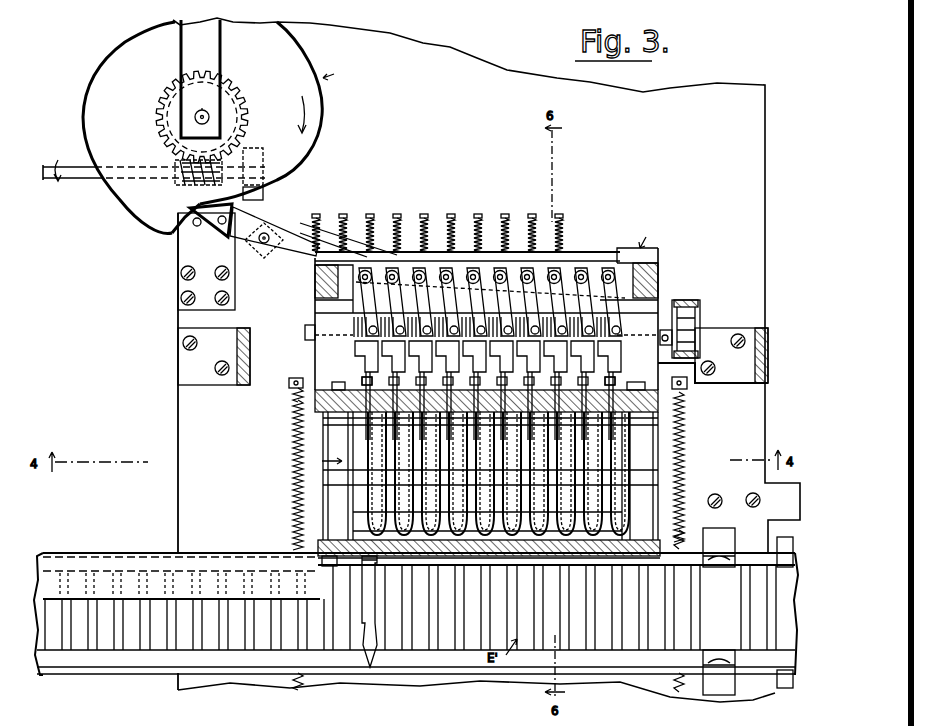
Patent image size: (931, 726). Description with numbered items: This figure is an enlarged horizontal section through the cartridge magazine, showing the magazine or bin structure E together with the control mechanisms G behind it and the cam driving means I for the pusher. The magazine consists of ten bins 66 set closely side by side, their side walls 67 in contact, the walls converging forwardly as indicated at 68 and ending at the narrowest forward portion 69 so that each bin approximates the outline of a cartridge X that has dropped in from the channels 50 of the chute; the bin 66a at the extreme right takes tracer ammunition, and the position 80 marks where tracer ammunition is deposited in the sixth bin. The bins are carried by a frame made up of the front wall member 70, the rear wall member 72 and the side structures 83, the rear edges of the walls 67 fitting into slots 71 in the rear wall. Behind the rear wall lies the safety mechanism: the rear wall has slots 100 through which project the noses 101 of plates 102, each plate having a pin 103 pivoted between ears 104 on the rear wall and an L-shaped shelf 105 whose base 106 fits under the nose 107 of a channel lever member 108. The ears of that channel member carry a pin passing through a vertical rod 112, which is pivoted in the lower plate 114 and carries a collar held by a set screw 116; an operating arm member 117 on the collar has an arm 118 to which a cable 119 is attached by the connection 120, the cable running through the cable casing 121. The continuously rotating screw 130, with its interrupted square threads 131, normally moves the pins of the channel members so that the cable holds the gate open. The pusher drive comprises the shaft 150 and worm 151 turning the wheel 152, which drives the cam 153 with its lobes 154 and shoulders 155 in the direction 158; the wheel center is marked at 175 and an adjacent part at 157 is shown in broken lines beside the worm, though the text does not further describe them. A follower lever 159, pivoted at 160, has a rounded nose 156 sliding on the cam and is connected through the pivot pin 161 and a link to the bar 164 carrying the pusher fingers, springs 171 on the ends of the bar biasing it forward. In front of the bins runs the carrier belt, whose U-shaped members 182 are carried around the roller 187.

The cam 153 is at (152, 47).
The lobes 154 is at (84, 119).
The shoulders 155 is at (183, 218).
The wheel 152 is at (246, 107).
The gear hub 175 is at (201, 107).
The direction of cam rotation 158 is at (298, 116).
The shaft 150 is at (80, 175).
The worm 151 is at (194, 180).
The bearing 157 is at (228, 181).
The rounded nose 156 is at (212, 231).
The follower lever 159 is at (293, 228).
The pivot of follower lever 160 is at (265, 243).
The cable 119 is at (558, 221).
The arm 118 is at (577, 253).
The operating arm member 117 is at (602, 252).
The set screw 116 is at (632, 250).
The lower plate 114 is at (627, 274).
The channel lever member 108 is at (616, 299).
The connection 120 is at (542, 233).
The cable casing 121 is at (562, 228).
The continuously rotating screw 130 is at (440, 313).
The pivot pin 161 is at (511, 302).
The vertical rod 112 is at (558, 279).
The square threads 131 is at (602, 318).
The nose 107 is at (624, 328).
The base 106 is at (355, 335).
The L-shaped horizontal shelf 105 is at (618, 353).
The ears 104 is at (355, 362).
The pin 103 is at (350, 383).
The plate 102 is at (627, 388).
The slots 100 is at (350, 391).
The bar 164 is at (306, 376).
The rear wall member 72 is at (300, 405).
The springs 171 is at (294, 520).
The slots 71 is at (328, 415).
The side structures 83 is at (328, 489).
The side walls 67 is at (355, 442).
The bins 66 is at (355, 479).
The bin at extreme right 66a is at (620, 478).
The converging portion of side walls 68 is at (355, 517).
The narrowest forward portion 69 is at (355, 530).
The noses 101 is at (498, 473).
The front wall member 70 is at (320, 556).
The position of tracer deposit 80 is at (487, 538).
The U-shaped members 182 is at (131, 646).
The roller 187 is at (785, 684).
The channels 50 is at (476, 703).
The cam driving means I is at (332, 78).
The control mechanisms G is at (644, 236).
The magazine or bin structure E is at (324, 463).
The cartridge X is at (369, 611).